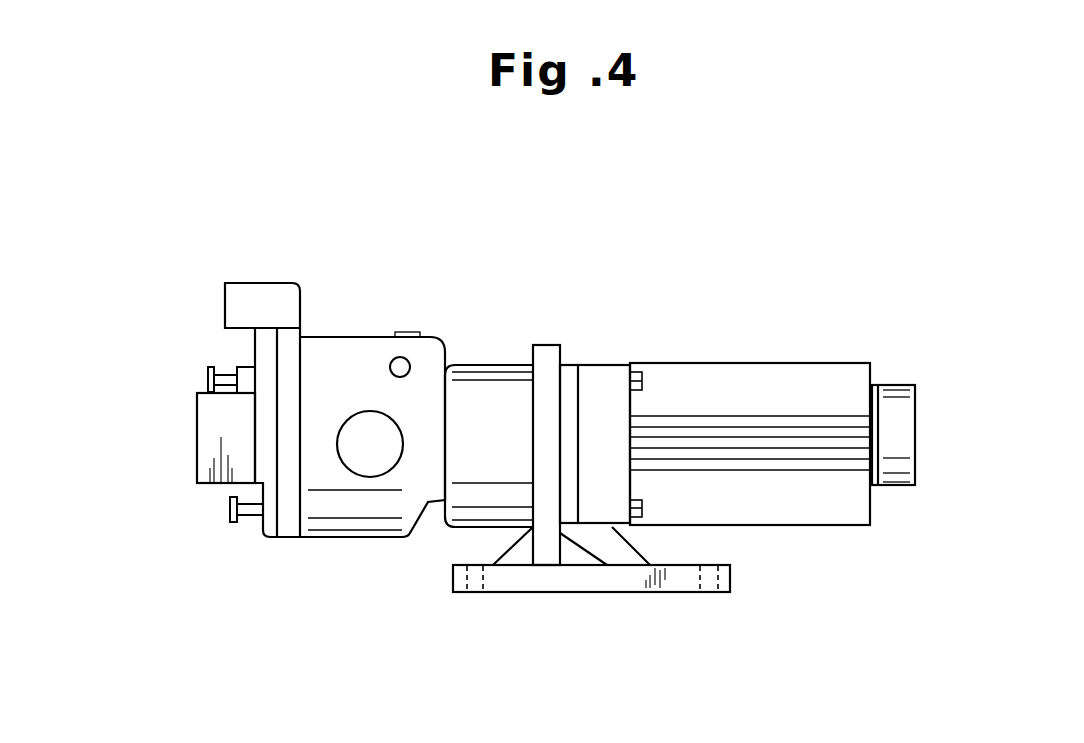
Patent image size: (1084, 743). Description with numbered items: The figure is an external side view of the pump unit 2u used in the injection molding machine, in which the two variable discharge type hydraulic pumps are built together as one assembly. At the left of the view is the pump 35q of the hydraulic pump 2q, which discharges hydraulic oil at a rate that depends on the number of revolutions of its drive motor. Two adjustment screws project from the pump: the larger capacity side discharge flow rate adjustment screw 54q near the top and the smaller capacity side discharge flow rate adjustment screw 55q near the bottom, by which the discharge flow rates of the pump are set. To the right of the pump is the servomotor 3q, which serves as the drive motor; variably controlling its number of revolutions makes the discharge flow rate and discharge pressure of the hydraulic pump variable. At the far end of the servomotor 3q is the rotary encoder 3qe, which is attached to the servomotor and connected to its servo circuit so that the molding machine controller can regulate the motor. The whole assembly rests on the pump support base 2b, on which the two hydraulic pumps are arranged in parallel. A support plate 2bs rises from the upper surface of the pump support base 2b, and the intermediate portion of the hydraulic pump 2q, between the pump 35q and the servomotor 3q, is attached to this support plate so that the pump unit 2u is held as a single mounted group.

The pump unit 2u is at (681, 287).
The pump 35q is at (370, 337).
The larger capacity side discharge flow rate adjustment screw 54q is at (208, 378).
The smaller capacity side discharge flow rate adjustment screw 55q is at (230, 508).
The support plate 2bs is at (553, 343).
The hydraulic pump 2q is at (711, 362).
The servomotor 3q is at (790, 526).
The rotary encoder 3qe is at (897, 383).
The pump support base 2b is at (606, 594).